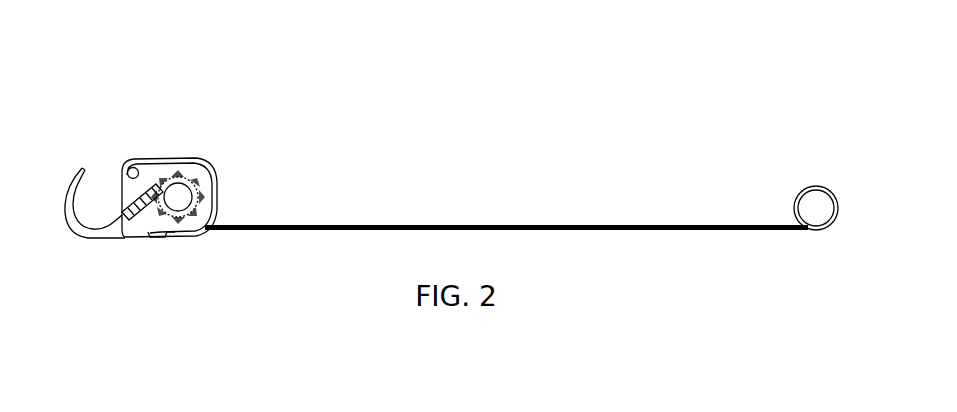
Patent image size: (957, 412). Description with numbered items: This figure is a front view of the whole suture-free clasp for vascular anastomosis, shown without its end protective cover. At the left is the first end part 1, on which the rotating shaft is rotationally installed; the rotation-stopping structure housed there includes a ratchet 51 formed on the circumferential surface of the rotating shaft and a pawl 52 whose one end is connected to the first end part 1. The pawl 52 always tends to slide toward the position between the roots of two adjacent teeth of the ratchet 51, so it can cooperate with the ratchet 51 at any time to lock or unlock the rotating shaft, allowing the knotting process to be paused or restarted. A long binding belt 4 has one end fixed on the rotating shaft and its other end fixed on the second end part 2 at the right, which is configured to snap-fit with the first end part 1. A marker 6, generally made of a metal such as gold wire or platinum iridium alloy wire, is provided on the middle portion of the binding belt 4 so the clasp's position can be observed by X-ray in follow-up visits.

The first end part 1 is at (82, 176).
The second end part 2 is at (826, 190).
The binding belt 4 is at (293, 224).
The marker 6 is at (506, 224).
The ratchet 51 is at (198, 182).
The pawl 52 is at (143, 199).